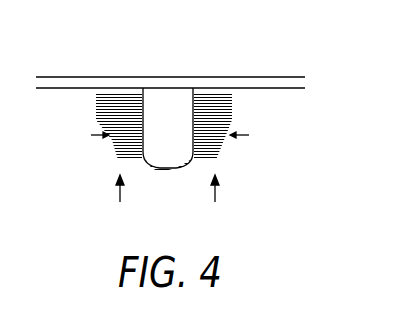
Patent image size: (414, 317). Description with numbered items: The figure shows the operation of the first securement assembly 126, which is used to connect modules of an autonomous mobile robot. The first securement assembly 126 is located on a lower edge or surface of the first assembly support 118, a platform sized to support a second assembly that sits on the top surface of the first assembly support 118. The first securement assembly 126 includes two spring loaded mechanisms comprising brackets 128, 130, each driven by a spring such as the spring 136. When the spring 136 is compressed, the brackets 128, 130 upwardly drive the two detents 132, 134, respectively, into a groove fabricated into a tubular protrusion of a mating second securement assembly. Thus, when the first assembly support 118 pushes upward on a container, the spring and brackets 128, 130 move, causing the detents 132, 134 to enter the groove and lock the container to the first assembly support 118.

The first securement assembly 126 is at (91, 55).
The first assembly support 118 is at (270, 117).
The detent 132 is at (135, 135).
The detent 134 is at (206, 131).
The bracket 130 is at (225, 160).
The spring 136 is at (216, 193).
The bracket 128 is at (112, 158).